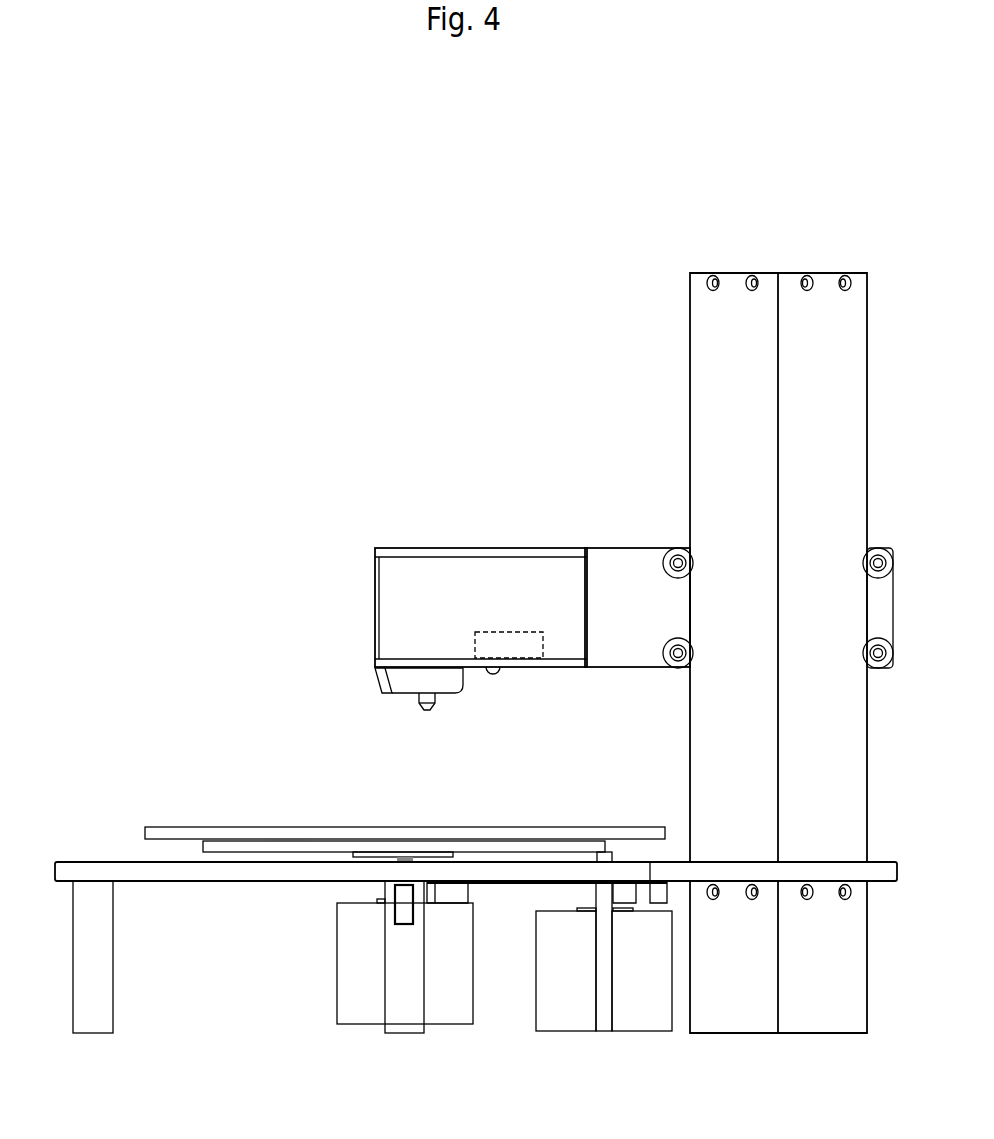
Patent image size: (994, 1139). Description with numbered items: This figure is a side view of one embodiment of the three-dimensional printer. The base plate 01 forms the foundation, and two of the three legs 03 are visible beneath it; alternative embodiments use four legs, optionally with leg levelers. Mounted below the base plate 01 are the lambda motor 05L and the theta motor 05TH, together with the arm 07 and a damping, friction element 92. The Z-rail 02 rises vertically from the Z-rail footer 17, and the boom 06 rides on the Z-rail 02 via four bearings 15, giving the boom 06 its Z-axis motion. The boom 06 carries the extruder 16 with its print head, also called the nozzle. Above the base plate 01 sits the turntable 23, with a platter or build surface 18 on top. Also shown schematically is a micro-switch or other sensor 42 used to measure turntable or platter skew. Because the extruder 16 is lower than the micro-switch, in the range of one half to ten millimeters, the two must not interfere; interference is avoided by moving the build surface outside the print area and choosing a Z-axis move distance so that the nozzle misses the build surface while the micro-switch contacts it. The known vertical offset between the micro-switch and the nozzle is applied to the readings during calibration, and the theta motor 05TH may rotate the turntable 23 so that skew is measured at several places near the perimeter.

The base plate 01 is at (145, 877).
The Z-rail 02 is at (718, 395).
The legs 03 is at (98, 1007).
The lambda motor 05L is at (357, 997).
The theta motor 05TH is at (565, 1008).
The boom 06 is at (488, 587).
The arm 07 is at (499, 892).
The bearings 15 is at (668, 670).
The extruder 16 is at (408, 683).
The Z-rail footer 17 is at (805, 1020).
The platter or build surface 18 is at (210, 833).
The turntable 23 is at (298, 848).
The micro-switch or other sensor 42 is at (497, 676).
The damping, friction element 92 is at (404, 905).